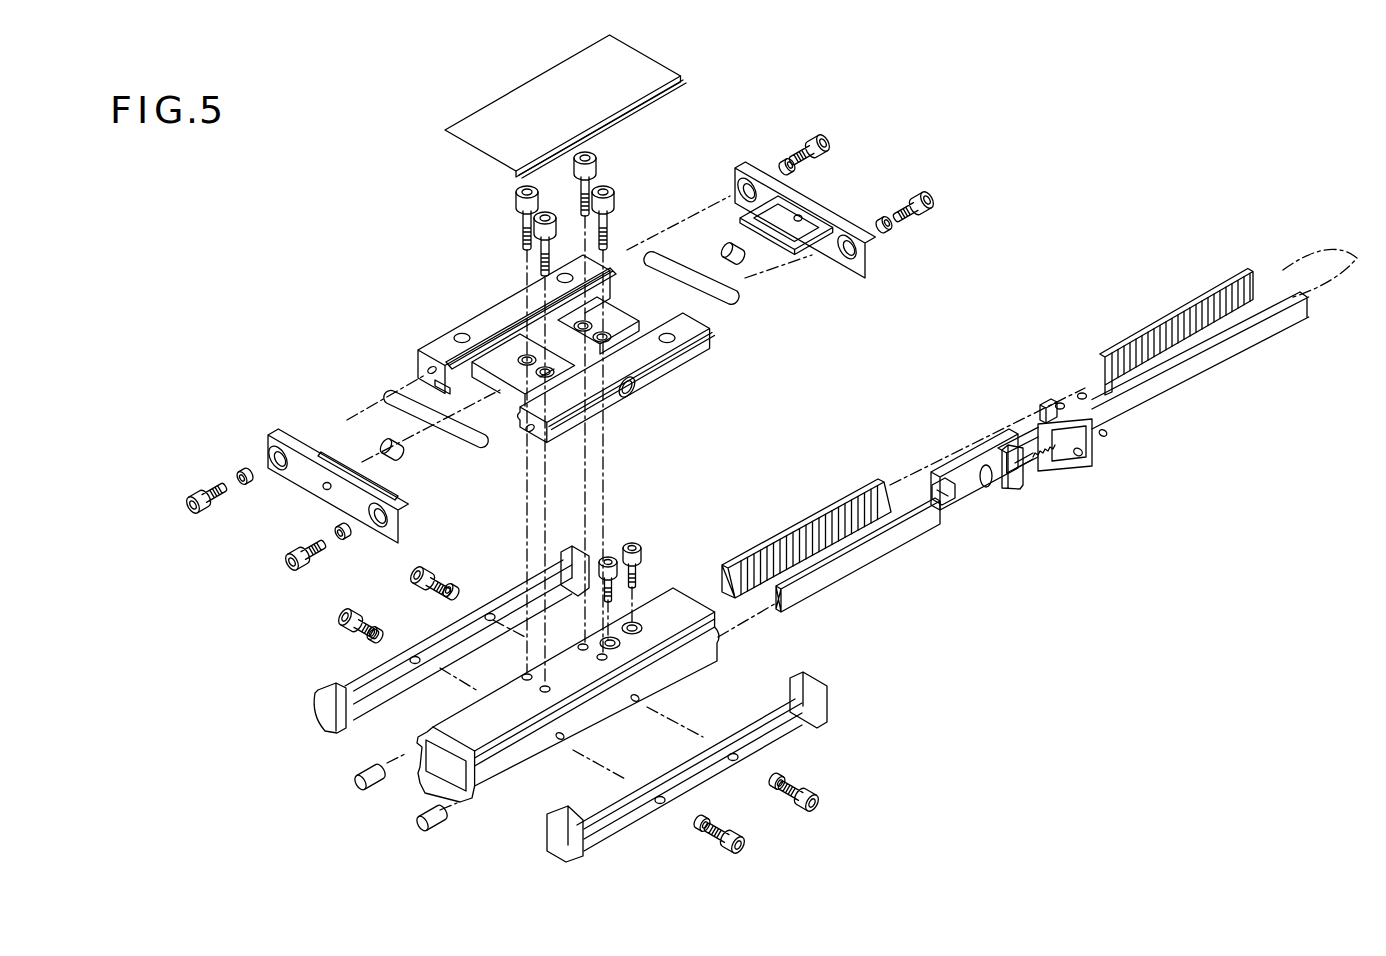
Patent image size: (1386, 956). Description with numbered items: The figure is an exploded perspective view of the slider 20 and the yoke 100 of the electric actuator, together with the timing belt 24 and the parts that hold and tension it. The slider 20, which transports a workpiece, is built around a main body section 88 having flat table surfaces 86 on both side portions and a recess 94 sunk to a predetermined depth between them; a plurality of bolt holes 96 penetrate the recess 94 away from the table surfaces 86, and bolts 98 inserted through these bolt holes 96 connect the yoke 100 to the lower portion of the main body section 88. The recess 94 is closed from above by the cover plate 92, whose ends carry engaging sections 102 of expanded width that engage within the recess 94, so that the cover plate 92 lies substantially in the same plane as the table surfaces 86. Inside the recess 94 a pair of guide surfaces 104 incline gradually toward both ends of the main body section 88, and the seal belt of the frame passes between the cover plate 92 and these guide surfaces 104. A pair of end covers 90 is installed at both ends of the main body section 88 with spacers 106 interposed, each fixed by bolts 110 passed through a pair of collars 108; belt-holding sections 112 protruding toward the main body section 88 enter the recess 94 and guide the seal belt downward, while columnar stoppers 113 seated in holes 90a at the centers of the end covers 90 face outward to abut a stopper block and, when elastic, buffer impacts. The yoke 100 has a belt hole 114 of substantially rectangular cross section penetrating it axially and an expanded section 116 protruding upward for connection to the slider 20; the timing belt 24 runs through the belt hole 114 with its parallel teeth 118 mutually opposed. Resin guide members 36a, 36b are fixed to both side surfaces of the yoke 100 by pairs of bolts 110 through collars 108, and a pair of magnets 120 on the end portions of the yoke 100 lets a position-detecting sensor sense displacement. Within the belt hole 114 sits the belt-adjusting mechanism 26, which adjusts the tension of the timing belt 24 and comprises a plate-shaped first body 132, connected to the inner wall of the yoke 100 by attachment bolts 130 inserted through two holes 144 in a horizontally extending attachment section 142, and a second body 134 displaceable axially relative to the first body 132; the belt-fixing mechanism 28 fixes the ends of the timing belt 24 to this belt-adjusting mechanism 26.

The slider 20 is at (552, 382).
The timing belt 24 is at (893, 543).
The belt-adjusting mechanism 26 is at (1084, 466).
The belt-fixing mechanism 28 is at (945, 469).
The guide member 36a is at (625, 814).
The guide member 36b is at (347, 690).
The table surfaces 86 is at (520, 300).
The main body section 88 is at (661, 378).
The end covers 90 is at (303, 470).
The holes 90a is at (327, 490).
The cover plate 92 is at (572, 106).
The recess 94 is at (557, 378).
The bolt holes 96 is at (500, 334).
The bolts 98 is at (526, 212).
The yoke 100 is at (530, 666).
The engaging sections 102 is at (638, 112).
The guide surfaces 104 is at (607, 326).
The spacers 106 is at (457, 443).
The collars 108 is at (242, 470).
The bolts 110 is at (193, 497).
The belt-holding sections 112 is at (348, 446).
The stoppers 113 is at (392, 440).
The belt hole 114 is at (437, 762).
The expanded section 116 is at (470, 713).
The parallel teeth 118 is at (803, 537).
The magnets 120 is at (420, 815).
The attachment bolts 130 is at (632, 545).
The first body 132 is at (1138, 418).
The second body 134 is at (975, 507).
The attachment section 142 is at (1042, 408).
The holes 144 is at (1081, 392).